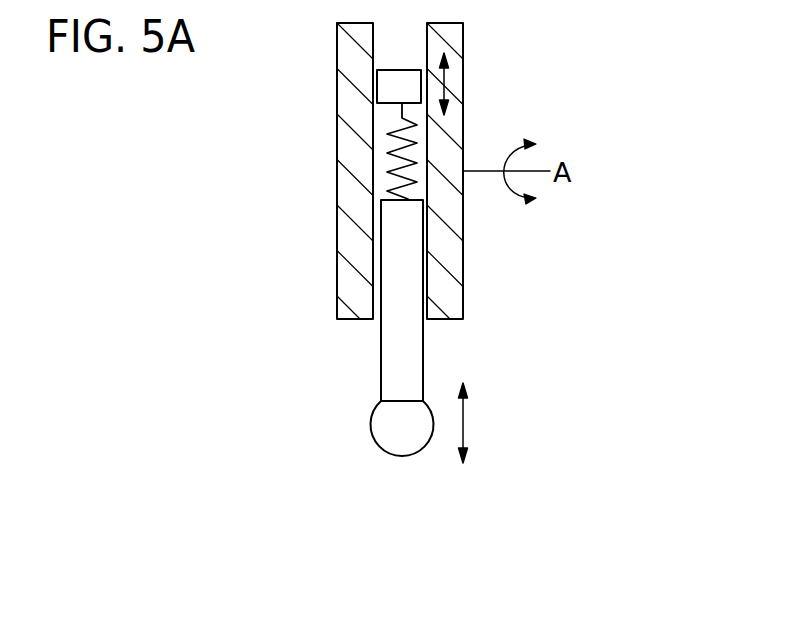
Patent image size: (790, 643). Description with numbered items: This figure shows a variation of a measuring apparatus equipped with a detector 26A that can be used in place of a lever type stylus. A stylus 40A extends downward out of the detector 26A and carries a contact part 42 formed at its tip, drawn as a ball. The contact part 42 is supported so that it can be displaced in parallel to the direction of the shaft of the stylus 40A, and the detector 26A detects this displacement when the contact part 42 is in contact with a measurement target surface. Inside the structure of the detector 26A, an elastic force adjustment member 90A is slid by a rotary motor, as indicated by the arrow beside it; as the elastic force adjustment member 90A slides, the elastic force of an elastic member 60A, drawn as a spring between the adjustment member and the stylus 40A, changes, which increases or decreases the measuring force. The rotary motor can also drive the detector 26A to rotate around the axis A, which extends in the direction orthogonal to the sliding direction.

The detector 26A is at (564, 63).
The elastic force adjustment member 90A is at (397, 76).
The elastic member 60A is at (398, 172).
The stylus 40A is at (413, 352).
The contact part 42 is at (378, 422).